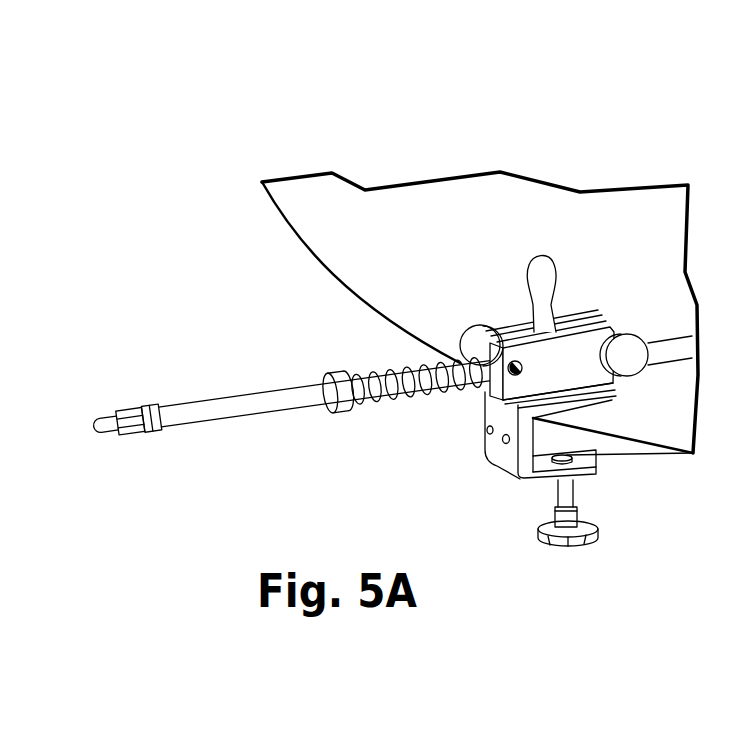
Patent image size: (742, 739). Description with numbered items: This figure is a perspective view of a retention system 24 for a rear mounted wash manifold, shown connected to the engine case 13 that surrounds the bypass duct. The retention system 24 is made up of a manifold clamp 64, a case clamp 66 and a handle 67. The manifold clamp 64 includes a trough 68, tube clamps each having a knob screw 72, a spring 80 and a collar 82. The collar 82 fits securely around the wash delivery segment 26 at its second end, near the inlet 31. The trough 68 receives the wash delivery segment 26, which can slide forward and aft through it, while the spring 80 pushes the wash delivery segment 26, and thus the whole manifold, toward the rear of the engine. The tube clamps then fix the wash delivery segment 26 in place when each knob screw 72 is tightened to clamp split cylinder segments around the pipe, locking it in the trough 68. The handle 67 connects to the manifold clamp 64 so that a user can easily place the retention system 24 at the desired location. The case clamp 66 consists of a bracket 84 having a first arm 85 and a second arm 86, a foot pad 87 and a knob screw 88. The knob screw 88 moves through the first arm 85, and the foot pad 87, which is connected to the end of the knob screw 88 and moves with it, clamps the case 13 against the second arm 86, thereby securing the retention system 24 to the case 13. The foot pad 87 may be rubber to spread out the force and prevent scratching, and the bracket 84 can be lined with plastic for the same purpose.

The case 13 is at (322, 225).
The retention system 24 is at (480, 287).
The wash delivery segment 26 is at (245, 417).
The inlet 31 is at (97, 428).
The manifold clamp 64 is at (632, 297).
The case clamp 66 is at (470, 505).
The handle 67 is at (543, 270).
The trough 68 is at (580, 357).
The knob screw 72 is at (472, 330).
The spring 80 is at (392, 405).
The collar 82 is at (338, 412).
The bracket 84 is at (513, 463).
The first arm 85 is at (598, 465).
The second arm 86 is at (613, 398).
The foot pad 87 is at (565, 455).
The knob screw 88 is at (598, 533).